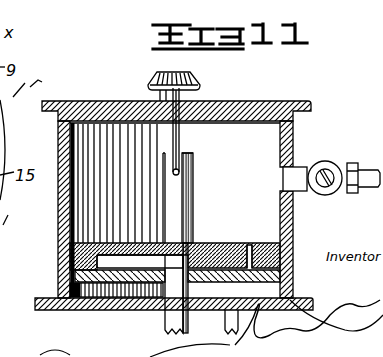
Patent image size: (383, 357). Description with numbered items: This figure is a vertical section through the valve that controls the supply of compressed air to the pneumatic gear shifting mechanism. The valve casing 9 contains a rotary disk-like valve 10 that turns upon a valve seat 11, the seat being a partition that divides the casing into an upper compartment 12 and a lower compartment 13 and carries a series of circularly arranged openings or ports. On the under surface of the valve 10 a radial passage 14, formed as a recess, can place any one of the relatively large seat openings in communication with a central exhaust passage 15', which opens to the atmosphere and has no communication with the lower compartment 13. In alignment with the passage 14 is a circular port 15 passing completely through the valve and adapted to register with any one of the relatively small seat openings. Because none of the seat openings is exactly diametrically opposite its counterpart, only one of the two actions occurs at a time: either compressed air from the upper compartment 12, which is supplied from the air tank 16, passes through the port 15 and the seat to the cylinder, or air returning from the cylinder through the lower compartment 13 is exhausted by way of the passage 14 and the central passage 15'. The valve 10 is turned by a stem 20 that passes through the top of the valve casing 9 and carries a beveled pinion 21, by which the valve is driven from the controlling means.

The valve casing 9 is at (58, 229).
The rotary disk-like valve 10 is at (62, 256).
The valve seat 11 is at (127, 276).
The upper compartment 12 is at (263, 145).
The lower compartment 13 is at (226, 330).
The radial passage 14 is at (183, 240).
The circular port 15 is at (293, 238).
The central exhaust passage 15' is at (157, 293).
The air tank 16 is at (340, 161).
The stem 20 is at (185, 139).
The beveled pinion 21 is at (185, 98).